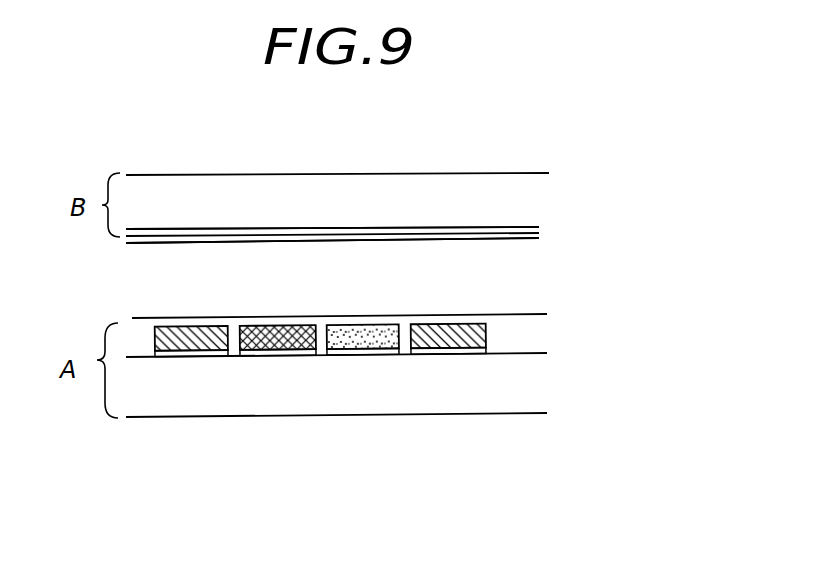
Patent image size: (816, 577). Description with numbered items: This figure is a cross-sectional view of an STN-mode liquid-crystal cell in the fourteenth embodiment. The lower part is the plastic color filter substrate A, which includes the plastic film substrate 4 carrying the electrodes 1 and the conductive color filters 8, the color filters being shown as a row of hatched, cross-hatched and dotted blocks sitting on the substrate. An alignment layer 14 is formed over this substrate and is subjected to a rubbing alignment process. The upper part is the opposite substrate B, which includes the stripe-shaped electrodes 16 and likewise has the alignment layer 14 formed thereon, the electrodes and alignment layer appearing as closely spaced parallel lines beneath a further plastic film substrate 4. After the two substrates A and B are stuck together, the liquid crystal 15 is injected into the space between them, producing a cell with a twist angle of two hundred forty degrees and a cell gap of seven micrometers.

The plastic film substrate 4 is at (344, 197).
The stripe-shaped electrodes 16 is at (505, 224).
The alignment layer 14 is at (487, 313).
The liquid crystal 15 is at (156, 286).
The conductive color filters 8 is at (488, 340).
The electrodes 1 is at (437, 357).